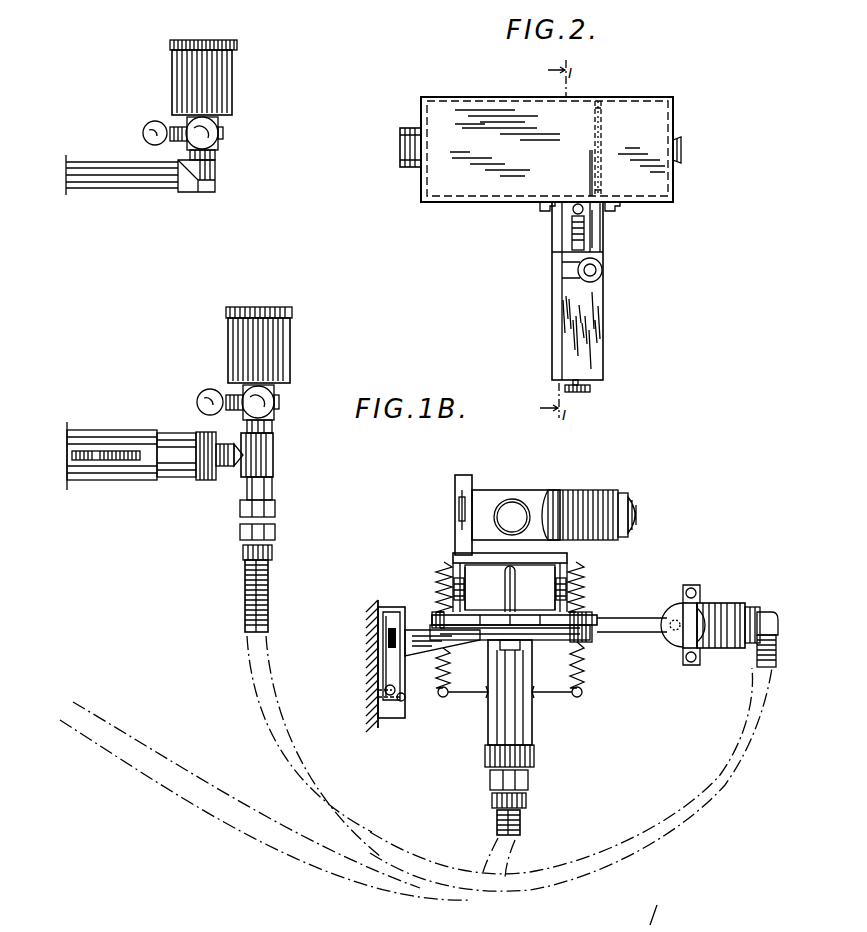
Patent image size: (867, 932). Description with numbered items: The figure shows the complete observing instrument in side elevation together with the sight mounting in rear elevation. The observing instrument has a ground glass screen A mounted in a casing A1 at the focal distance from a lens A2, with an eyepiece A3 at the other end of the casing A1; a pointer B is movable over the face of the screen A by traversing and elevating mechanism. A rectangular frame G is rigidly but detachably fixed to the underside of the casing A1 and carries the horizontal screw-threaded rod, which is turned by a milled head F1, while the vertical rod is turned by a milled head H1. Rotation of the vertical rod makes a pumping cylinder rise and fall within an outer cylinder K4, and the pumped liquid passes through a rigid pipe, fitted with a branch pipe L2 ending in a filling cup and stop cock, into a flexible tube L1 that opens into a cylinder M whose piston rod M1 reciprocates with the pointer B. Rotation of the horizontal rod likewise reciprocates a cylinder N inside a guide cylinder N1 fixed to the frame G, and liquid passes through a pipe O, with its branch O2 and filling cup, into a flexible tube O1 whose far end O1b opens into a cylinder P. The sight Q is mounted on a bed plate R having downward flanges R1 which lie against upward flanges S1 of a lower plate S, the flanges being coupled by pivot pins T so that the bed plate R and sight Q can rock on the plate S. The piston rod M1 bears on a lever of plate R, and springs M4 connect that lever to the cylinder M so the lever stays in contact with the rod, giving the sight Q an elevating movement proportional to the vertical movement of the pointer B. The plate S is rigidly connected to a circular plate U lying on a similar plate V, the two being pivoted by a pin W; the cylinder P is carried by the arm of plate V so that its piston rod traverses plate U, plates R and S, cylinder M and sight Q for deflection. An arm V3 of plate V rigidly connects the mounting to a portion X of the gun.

In FIG. 2, the casing A1 is at (490, 95).
In FIG. 2, the screen A is at (600, 130).
In FIG. 2, the lens A2 is at (400, 150).
In FIG. 2, the eyepiece A3 is at (681, 150).
In FIG. 2, the pointer B is at (590, 156).
In FIG. 2, the cylinder K4 is at (576, 228).
In FIG. 2, the frame G is at (600, 230).
In FIG. 2, the milled head F1 is at (600, 266).
In FIG. 2, the milled head H1 is at (590, 388).
In FIG. 1B, the branch pipe L2 is at (95, 165).
In FIG. 1B, the branch O2 is at (272, 432).
In FIG. 1B, the pipe O is at (226, 466).
In FIG. 1B, the cylinder N is at (170, 480).
In FIG. 1B, the guide cylinder N1 is at (107, 480).
In FIG. 1B, the flexible tube O1 is at (245, 595).
In FIG. 1B, the flexible tube O1b is at (757, 658).
In FIG. 1B, the sight Q is at (580, 490).
In FIG. 1B, the plate R is at (470, 558).
In FIG. 1B, the flanges R1 is at (450, 567).
In FIG. 1B, the piston rod M1 is at (566, 577).
In FIG. 1B, the pivot pins T is at (438, 576).
In FIG. 1B, the flanges S1 is at (458, 590).
In FIG. 1B, the circular plate U is at (590, 623).
In FIG. 1B, the plate V is at (580, 633).
In FIG. 1B, the arm V3 is at (405, 637).
In FIG. 1B, the portion of the gun X is at (375, 620).
In FIG. 1B, the springs M4 is at (440, 688).
In FIG. 1B, the plate S is at (482, 640).
In FIG. 1B, the pin W is at (512, 648).
In FIG. 1B, the cylinder M is at (520, 732).
In FIG. 1B, the flexible tube L1 is at (520, 818).
In FIG. 1B, the cylinder P is at (720, 620).